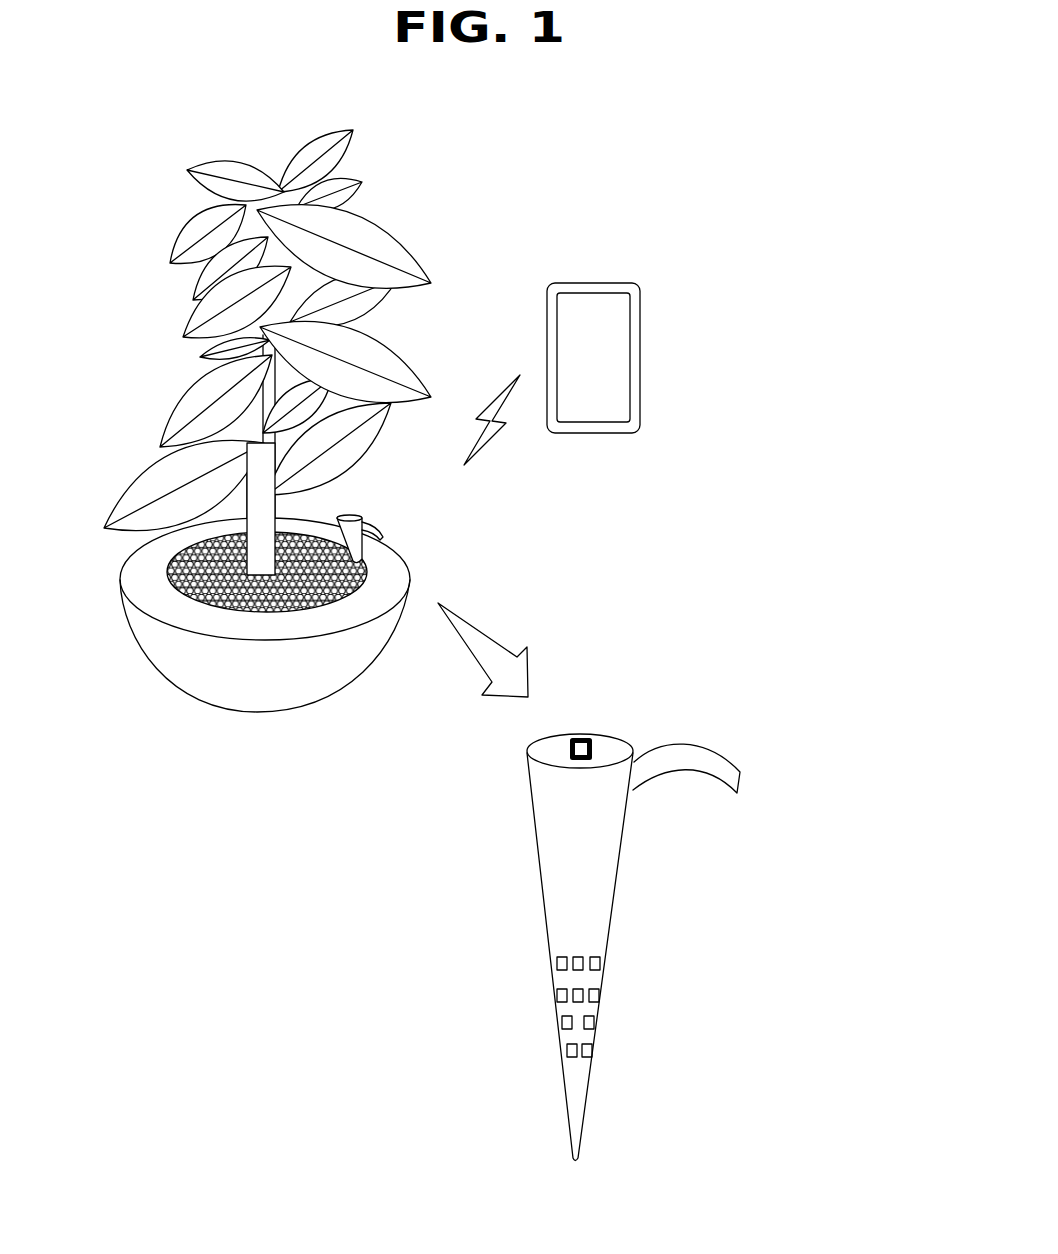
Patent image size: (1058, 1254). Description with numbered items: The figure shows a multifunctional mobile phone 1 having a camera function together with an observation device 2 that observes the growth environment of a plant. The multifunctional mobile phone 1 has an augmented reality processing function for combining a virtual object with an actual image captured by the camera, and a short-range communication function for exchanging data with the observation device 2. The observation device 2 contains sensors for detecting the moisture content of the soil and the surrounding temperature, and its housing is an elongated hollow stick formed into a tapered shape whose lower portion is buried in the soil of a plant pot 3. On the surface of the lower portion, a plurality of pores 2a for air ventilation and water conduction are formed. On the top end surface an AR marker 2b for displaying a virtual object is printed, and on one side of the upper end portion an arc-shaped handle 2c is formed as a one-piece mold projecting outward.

The multifunctional mobile phone 1 is at (557, 292).
The observation device 2 is at (366, 516).
The pores 2a is at (651, 1007).
The AR marker 2b is at (596, 733).
The handle 2c is at (745, 782).
The plant pot 3 is at (393, 574).